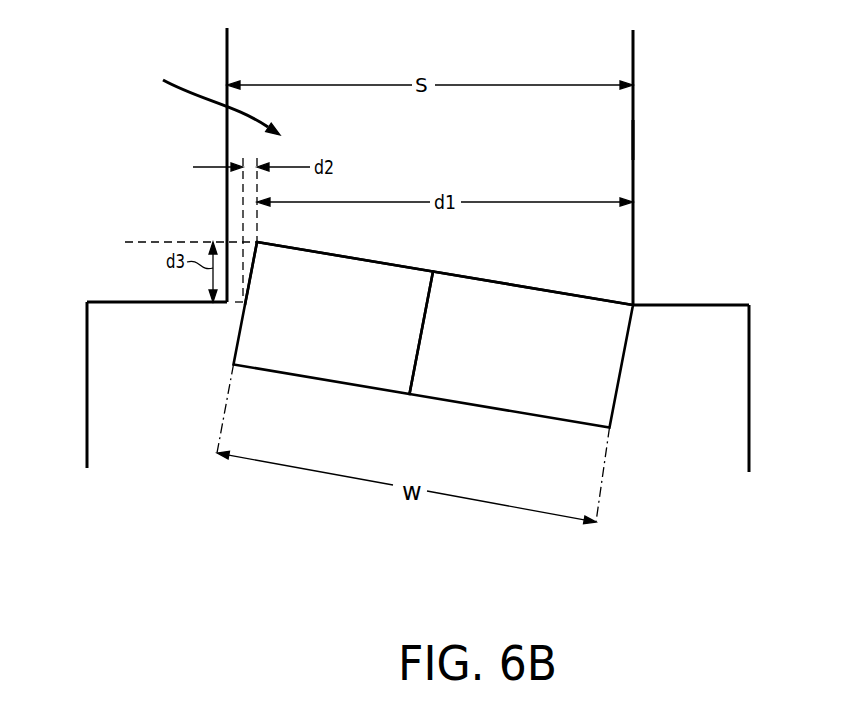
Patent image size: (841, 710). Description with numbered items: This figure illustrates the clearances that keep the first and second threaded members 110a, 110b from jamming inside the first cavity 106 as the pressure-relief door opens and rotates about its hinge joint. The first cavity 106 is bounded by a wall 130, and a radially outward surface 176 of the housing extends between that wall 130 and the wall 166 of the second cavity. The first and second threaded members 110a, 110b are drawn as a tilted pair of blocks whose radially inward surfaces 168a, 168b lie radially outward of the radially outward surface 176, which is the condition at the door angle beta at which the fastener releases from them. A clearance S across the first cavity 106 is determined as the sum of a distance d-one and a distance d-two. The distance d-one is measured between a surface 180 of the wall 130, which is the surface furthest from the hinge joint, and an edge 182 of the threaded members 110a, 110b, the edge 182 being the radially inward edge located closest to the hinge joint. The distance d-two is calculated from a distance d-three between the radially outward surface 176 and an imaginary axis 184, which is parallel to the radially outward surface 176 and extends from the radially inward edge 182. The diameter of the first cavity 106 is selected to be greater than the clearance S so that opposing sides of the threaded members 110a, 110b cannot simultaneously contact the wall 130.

The first cavity 106 is at (211, 89).
The wall of first cavity 130 is at (148, 140).
The wall of second cavity 166 is at (58, 390).
The radially outward surface 176 is at (145, 302).
The surface of wall 180 is at (633, 137).
The edge 182 is at (258, 244).
The imaginary axis 184 is at (168, 242).
The radially inward surface of first threaded member 168a is at (490, 281).
The radially inward surface of second threaded member 168b is at (350, 257).
The first threaded member 110a is at (530, 360).
The second threaded member 110b is at (355, 338).